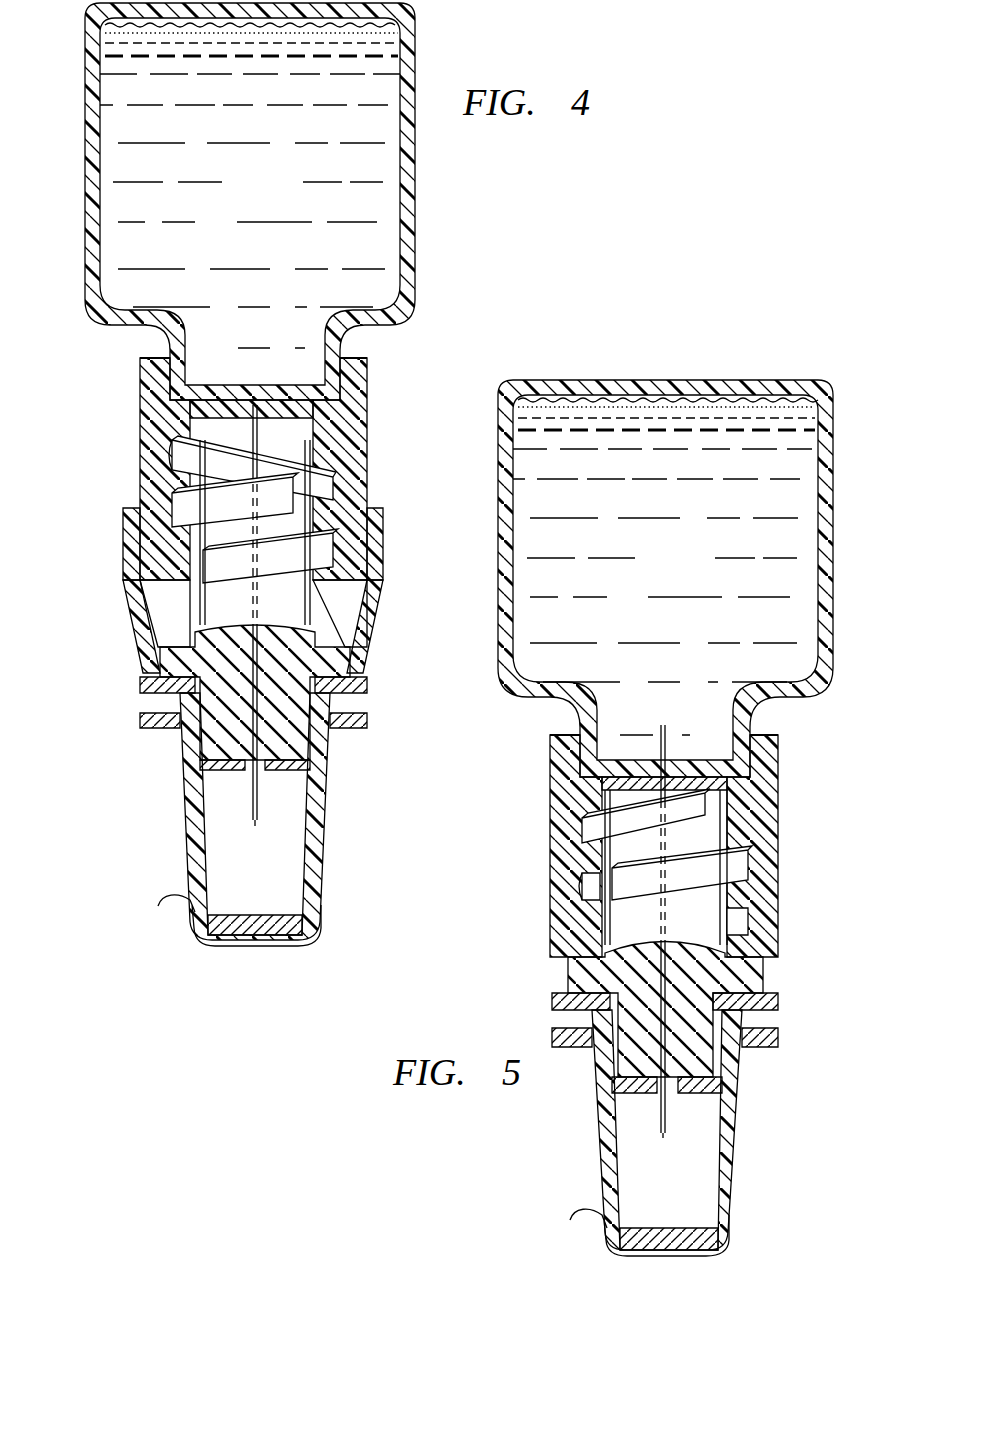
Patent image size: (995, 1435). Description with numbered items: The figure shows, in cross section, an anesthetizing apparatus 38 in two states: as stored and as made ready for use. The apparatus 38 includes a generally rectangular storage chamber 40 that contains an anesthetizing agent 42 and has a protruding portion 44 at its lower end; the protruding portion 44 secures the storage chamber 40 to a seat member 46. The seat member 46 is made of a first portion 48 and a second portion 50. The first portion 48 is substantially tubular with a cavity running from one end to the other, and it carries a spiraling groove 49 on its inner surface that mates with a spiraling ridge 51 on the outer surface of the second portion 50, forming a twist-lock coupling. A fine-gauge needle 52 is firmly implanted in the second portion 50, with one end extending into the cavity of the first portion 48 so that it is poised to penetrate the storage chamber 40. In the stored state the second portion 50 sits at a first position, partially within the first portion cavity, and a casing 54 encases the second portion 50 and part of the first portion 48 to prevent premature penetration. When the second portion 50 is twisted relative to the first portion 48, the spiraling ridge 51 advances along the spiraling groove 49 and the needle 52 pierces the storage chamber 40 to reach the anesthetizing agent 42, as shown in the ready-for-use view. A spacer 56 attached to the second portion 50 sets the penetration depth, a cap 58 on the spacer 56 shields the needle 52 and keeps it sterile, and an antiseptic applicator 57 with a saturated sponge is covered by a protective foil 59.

In FIG. 4, the apparatus 38 is at (432, 44).
In FIG. 5, the apparatus 38 is at (718, 358).
In FIG. 4, the storage chamber 40 is at (408, 300).
In FIG. 5, the storage chamber 40 is at (827, 678).
In FIG. 4, the anesthetizing agent 42 is at (266, 197).
In FIG. 5, the anesthetizing agent 42 is at (679, 572).
In FIG. 4, the protruding portion 44 is at (177, 377).
In FIG. 5, the protruding portion 44 is at (568, 750).
In FIG. 4, the seat member 46 is at (90, 408).
In FIG. 5, the seat member 46 is at (815, 848).
In FIG. 4, the first portion 48 is at (355, 413).
In FIG. 5, the first portion 48 is at (560, 910).
In FIG. 4, the spiraling groove 49 is at (175, 458).
In FIG. 5, the spiraling groove 49 is at (582, 885).
In FIG. 4, the second portion 50 is at (345, 630).
In FIG. 5, the second portion 50 is at (568, 968).
In FIG. 4, the spiraling ridge 51 is at (170, 512).
In FIG. 5, the spiraling ridge 51 is at (582, 825).
In FIG. 4, the needle 52 is at (257, 815).
In FIG. 5, the needle 52 is at (665, 724).
In FIG. 4, the casing 54 is at (130, 602).
In FIG. 4, the spacer 56 is at (360, 688).
In FIG. 5, the spacer 56 is at (776, 1000).
In FIG. 4, the antiseptic applicator 57 is at (272, 940).
In FIG. 5, the antiseptic applicator 57 is at (685, 1255).
In FIG. 4, the cap 58 is at (320, 848).
In FIG. 5, the cap 58 is at (733, 1163).
In FIG. 4, the protective foil 59 is at (160, 897).
In FIG. 5, the protective foil 59 is at (572, 1213).